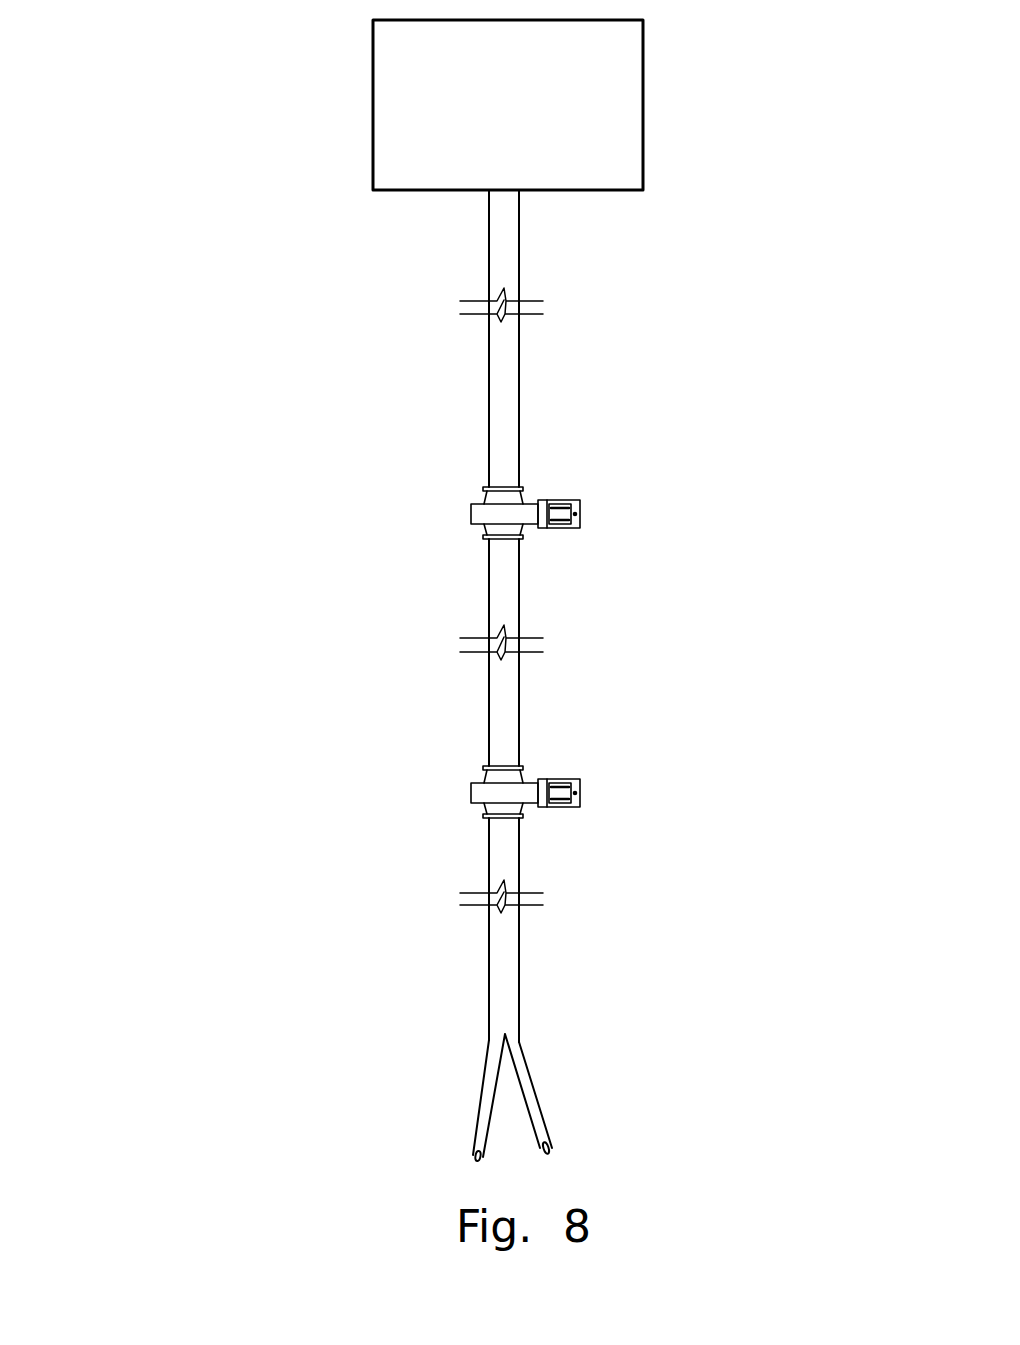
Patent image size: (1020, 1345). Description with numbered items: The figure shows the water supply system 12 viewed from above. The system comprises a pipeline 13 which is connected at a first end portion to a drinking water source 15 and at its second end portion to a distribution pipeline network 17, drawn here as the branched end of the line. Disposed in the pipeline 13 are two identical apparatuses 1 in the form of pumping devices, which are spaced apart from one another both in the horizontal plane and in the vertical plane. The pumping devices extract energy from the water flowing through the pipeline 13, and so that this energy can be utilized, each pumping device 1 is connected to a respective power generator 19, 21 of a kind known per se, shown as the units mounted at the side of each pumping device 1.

The water supply system 12 is at (205, 1088).
The drinking water source 15 is at (643, 113).
The pipeline 13 is at (489, 372).
The apparatus 1 is at (471, 514).
The power generator 19 is at (580, 503).
The power generator 21 is at (580, 782).
The distribution pipeline network 17 is at (575, 1102).